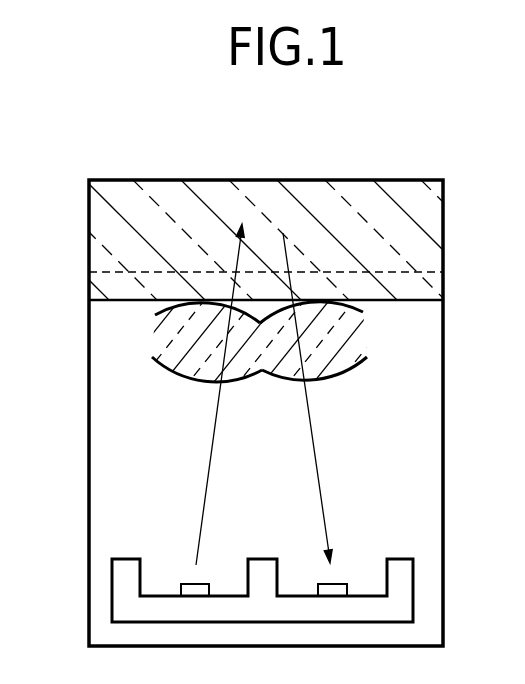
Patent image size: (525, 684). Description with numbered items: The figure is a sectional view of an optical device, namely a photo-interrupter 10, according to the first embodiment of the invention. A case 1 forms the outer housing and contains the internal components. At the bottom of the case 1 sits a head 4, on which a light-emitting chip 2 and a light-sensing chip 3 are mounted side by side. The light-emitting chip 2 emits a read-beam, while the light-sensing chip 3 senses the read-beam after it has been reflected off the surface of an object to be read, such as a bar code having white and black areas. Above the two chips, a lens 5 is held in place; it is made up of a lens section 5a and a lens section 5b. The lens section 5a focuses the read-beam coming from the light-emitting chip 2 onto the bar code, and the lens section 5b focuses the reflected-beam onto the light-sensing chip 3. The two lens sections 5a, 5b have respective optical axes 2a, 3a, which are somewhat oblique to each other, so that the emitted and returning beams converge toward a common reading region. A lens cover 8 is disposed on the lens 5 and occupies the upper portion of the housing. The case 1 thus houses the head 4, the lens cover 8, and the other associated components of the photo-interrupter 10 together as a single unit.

The photo-interrupter 10 is at (293, 128).
The case 1 is at (443, 408).
The lens cover 8 is at (437, 281).
The lens 5 is at (357, 340).
The lens section 5a is at (173, 380).
The lens section 5b is at (342, 378).
The head 4 is at (415, 583).
The light-emitting chip 2 is at (193, 583).
The light-sensing chip 3 is at (337, 583).
The optical axis 2a is at (212, 477).
The optical axis 3a is at (318, 476).